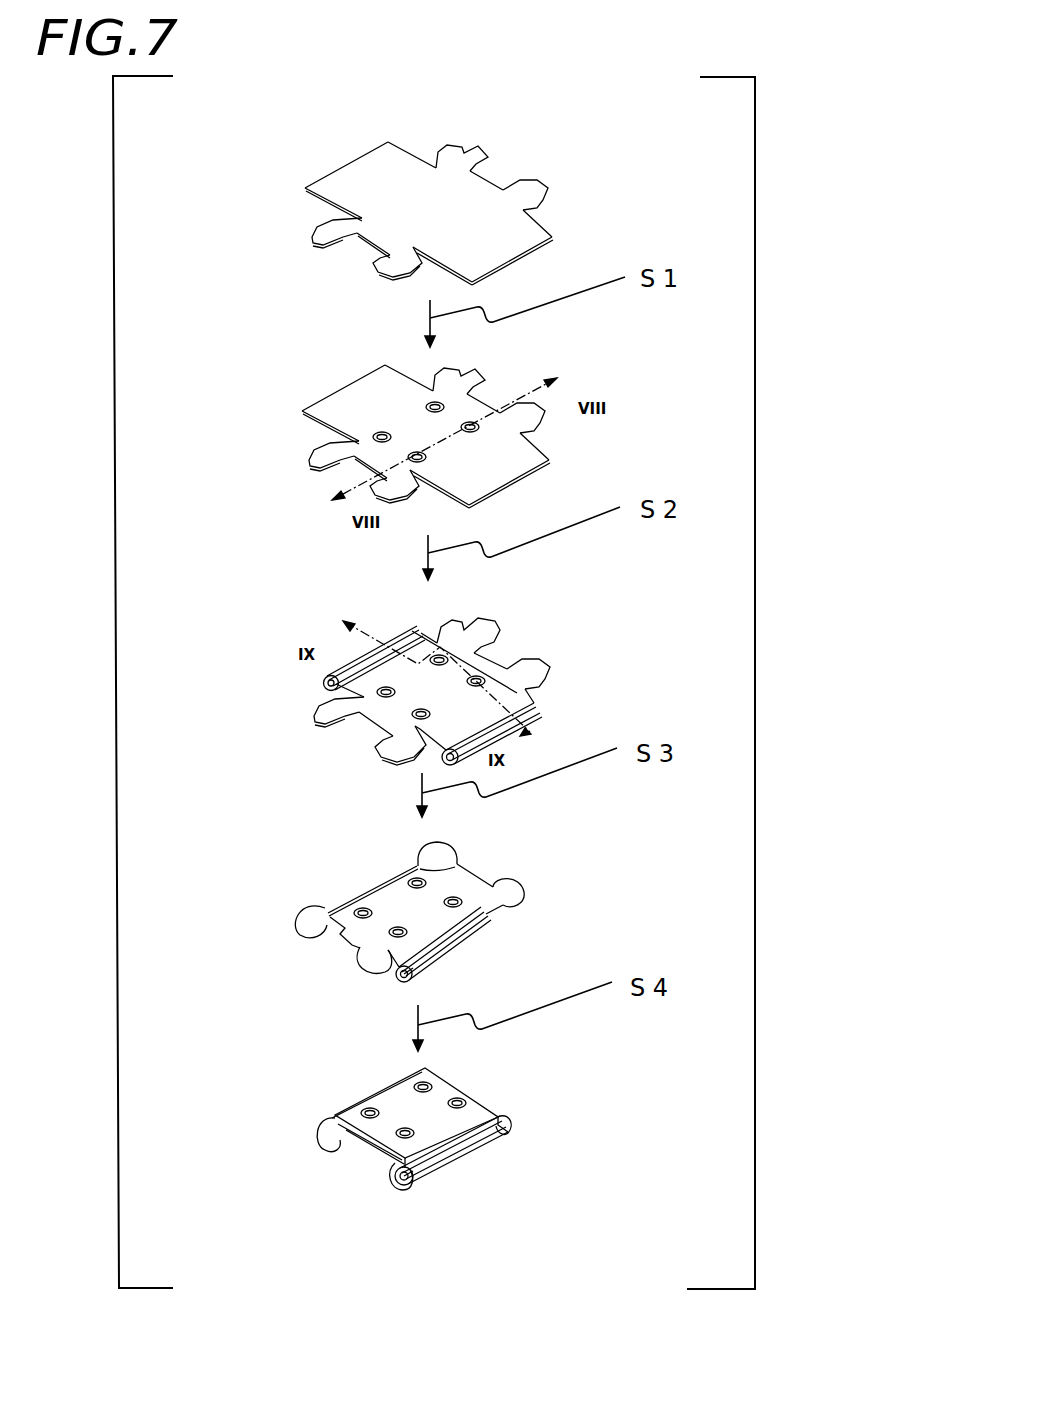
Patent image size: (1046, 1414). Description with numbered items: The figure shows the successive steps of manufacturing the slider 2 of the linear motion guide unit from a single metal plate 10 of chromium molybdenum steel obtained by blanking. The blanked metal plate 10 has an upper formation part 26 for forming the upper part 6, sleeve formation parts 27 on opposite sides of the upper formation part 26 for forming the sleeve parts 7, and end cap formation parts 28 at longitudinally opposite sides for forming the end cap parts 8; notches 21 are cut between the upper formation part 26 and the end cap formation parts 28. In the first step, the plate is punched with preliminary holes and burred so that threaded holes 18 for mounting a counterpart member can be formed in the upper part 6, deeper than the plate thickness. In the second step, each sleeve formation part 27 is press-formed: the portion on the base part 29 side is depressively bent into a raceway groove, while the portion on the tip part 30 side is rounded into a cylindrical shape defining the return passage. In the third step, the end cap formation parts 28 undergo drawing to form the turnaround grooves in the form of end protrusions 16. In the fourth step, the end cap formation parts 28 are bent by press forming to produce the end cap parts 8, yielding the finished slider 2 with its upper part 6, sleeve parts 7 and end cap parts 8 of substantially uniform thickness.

The slider 2 is at (504, 1106).
The upper part 6 is at (395, 1103).
The sleeve part 7 is at (462, 953).
The end cap part 8 is at (373, 1148).
The metal plate 10 is at (412, 150).
The end protrusion 16 is at (437, 847).
The threaded hole 18 is at (472, 432).
The notch 21 is at (328, 212).
The upper formation part 26 is at (467, 198).
The sleeve formation part 27 is at (357, 165).
The end cap formation part 28 is at (460, 158).
The base part 29 is at (490, 918).
The tip part 30 is at (437, 973).